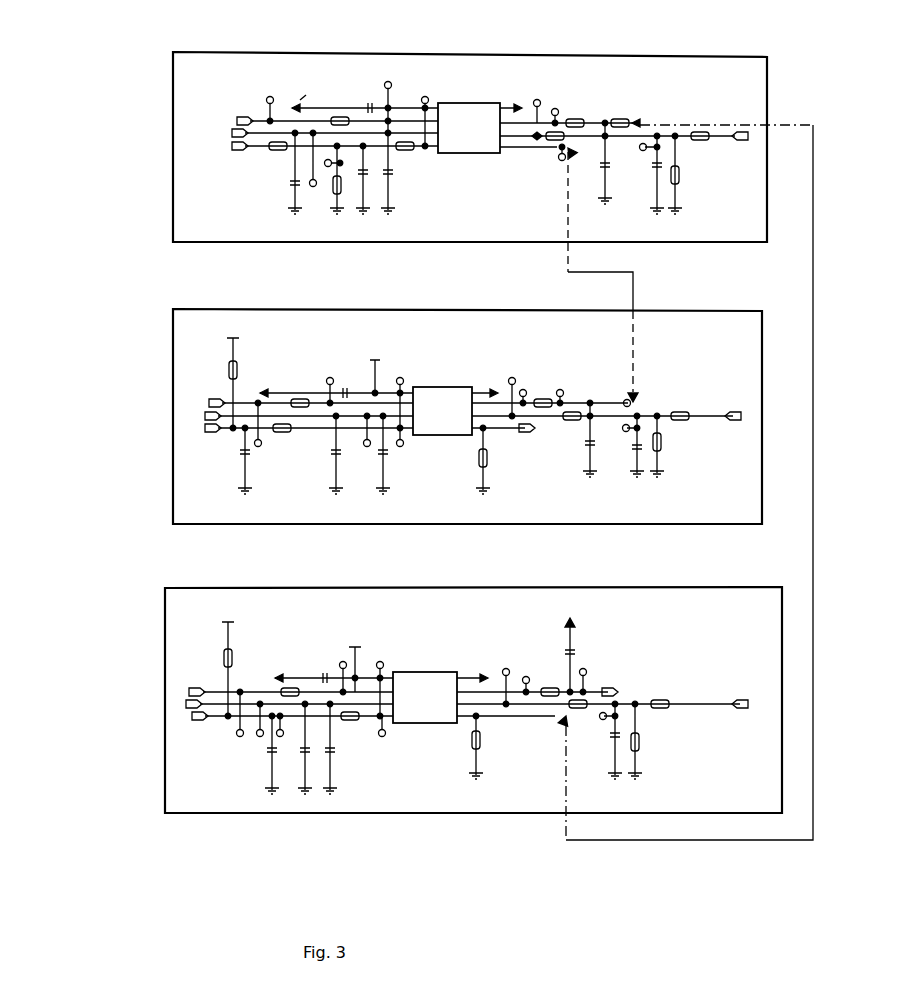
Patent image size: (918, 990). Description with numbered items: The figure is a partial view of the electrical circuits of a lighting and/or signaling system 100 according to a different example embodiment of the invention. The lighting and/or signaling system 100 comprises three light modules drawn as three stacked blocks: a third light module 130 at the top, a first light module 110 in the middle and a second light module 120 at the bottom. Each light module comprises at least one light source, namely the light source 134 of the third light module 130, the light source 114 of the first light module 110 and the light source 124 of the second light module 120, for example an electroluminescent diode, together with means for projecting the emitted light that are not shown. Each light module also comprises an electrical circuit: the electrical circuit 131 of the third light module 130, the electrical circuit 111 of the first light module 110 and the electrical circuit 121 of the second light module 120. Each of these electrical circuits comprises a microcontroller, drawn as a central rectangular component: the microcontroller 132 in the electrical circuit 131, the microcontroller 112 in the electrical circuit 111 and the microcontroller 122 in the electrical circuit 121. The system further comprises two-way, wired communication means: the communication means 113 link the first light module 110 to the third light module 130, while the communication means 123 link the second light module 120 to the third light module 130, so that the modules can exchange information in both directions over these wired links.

The lighting and/or signaling system 100 is at (101, 68).
The third light module 130 is at (184, 180).
The electrical circuit 131 is at (304, 93).
The microcontroller 132 is at (468, 103).
The light source 134 is at (739, 126).
The two-way wired communication means 113 is at (640, 275).
The first light module 110 is at (173, 373).
The electrical circuit 111 is at (257, 341).
The microcontroller 112 is at (438, 370).
The light source 114 is at (733, 422).
The second light module 120 is at (166, 663).
The electrical circuit 121 is at (246, 620).
The microcontroller 122 is at (424, 688).
The two-way wired communication means 123 is at (622, 842).
The light source 124 is at (740, 710).